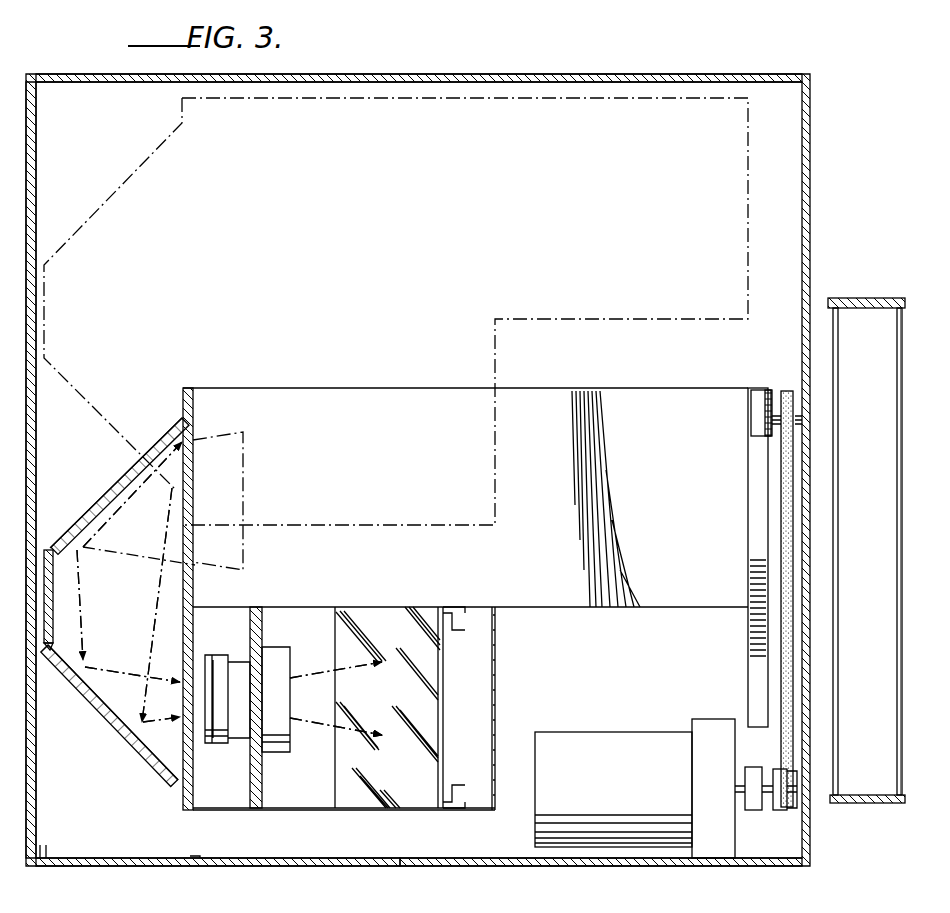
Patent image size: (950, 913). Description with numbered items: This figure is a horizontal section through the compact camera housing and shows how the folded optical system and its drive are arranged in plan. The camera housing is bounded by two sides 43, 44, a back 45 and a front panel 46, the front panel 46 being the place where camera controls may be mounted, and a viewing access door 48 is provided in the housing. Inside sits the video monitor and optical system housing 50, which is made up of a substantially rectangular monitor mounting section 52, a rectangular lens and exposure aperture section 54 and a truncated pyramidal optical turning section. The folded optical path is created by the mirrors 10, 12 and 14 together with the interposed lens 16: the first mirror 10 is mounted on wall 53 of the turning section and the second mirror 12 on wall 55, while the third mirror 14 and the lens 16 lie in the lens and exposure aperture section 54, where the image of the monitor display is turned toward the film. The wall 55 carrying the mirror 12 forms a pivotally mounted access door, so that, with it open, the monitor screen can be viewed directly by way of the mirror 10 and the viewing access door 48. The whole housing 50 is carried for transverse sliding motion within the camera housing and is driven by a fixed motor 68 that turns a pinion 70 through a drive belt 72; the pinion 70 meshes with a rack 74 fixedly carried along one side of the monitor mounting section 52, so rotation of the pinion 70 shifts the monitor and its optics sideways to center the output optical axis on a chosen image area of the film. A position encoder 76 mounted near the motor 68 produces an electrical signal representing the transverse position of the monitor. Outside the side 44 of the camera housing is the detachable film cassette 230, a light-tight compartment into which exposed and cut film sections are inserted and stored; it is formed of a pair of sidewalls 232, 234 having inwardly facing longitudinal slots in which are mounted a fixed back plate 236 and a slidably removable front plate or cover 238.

The mirror 10 is at (106, 508).
The mirror 12 is at (106, 700).
The mirror 14 is at (338, 780).
The lens 16 is at (240, 655).
The side 43 is at (36, 455).
The side 44 is at (808, 192).
The back 45 is at (554, 74).
The front panel 46 is at (430, 866).
The viewing access door 48 is at (128, 866).
The video monitor and optical system housing 50 is at (540, 322).
The monitor mounting section 52 is at (412, 388).
The wall 53 is at (108, 494).
The lens and exposure aperture section 54 is at (352, 810).
The wall 55 is at (136, 740).
The motor 68 is at (592, 732).
The pinion 70 is at (760, 388).
The drive belt 72 is at (781, 748).
The rack 74 is at (748, 531).
The position encoder 76 is at (745, 773).
The cassette 230 is at (873, 546).
The sidewall 232 is at (878, 298).
The sidewall 234 is at (848, 803).
The back plate 236 is at (897, 660).
The front plate 238 is at (838, 622).